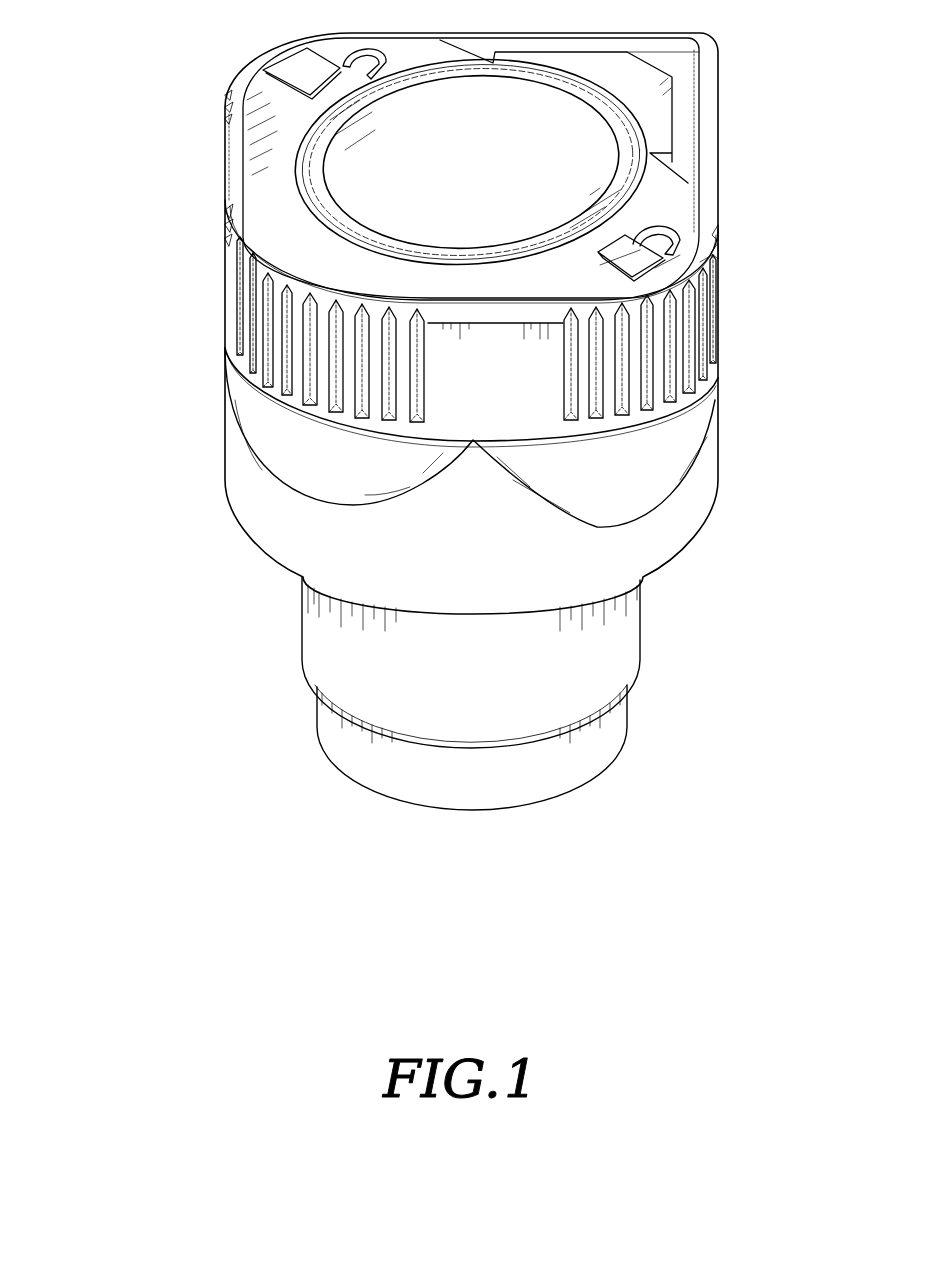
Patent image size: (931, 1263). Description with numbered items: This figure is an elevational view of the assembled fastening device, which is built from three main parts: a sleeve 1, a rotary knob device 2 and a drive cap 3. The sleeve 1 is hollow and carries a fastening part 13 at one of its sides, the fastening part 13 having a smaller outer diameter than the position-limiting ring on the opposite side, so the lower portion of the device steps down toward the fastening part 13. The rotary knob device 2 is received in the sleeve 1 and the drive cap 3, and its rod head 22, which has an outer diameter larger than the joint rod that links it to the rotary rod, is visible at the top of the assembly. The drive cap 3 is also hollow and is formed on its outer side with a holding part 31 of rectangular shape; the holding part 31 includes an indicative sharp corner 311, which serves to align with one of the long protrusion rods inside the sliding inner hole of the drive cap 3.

The sleeve 1 is at (478, 608).
The fastening part 13 is at (542, 790).
The rotary knob device 2 is at (350, 162).
The rod head 22 is at (357, 180).
The drive cap 3 is at (431, 233).
The holding part 31 is at (688, 328).
The indicative sharp corner 311 is at (695, 60).